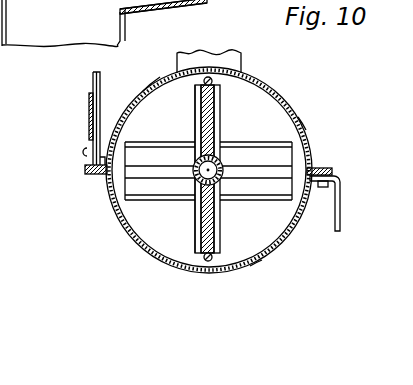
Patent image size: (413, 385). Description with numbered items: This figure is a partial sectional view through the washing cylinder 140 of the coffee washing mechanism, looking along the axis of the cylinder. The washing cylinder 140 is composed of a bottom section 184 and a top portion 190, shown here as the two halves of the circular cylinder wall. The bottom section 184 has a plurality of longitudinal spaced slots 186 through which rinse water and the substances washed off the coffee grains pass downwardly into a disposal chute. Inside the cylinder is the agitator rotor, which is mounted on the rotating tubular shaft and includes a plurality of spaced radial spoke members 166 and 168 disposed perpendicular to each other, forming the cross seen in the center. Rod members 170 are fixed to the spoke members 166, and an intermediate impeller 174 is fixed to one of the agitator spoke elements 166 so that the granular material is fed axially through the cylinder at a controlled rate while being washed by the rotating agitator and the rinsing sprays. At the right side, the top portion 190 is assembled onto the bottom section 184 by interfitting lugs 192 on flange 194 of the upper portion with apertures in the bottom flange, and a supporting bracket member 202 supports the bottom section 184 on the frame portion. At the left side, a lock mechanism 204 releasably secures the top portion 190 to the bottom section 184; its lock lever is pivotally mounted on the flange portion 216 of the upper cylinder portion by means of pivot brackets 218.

The washing cylinder 140 is at (148, 78).
The rod members 170 is at (240, 67).
The radial spoke members 166 is at (213, 110).
The intermediate impeller 174 is at (196, 115).
The top portion 190 is at (299, 118).
The radial spoke members 168 is at (277, 168).
The flange 194 is at (318, 173).
The supporting bracket member 202 is at (343, 207).
The lugs 192 is at (322, 188).
The longitudinal spaced slots 186 is at (255, 270).
The bottom section 184 is at (126, 233).
The lock mechanism 204 is at (80, 122).
The pivot brackets 218 is at (90, 143).
The flange portion 216 is at (87, 168).